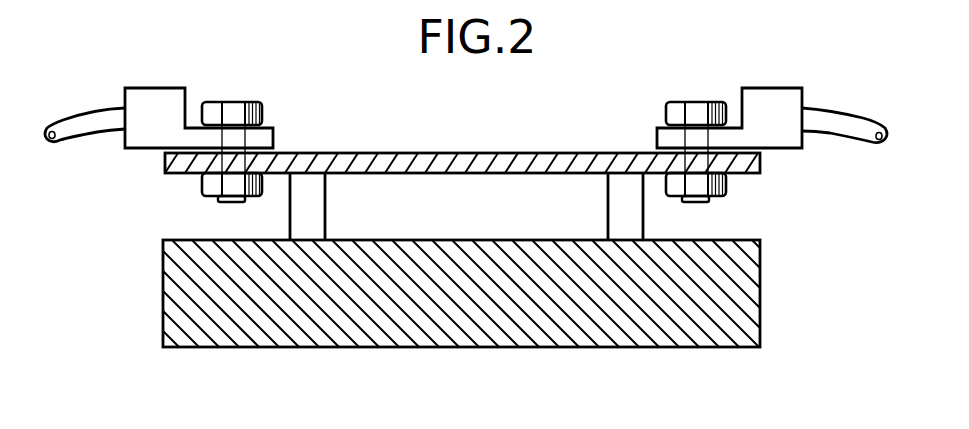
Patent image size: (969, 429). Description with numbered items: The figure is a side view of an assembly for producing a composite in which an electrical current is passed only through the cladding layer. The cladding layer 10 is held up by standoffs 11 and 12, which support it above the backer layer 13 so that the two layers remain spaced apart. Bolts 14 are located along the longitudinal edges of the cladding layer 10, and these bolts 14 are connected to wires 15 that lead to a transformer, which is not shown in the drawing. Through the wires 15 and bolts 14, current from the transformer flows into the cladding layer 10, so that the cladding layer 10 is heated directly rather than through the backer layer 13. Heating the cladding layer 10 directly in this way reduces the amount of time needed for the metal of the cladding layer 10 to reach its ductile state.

The cladding layer 10 is at (483, 153).
The standoff 11 is at (325, 195).
The standoff 12 is at (608, 197).
The backer layer 13 is at (302, 347).
The bolts 14 is at (236, 100).
The wires 15 is at (105, 107).